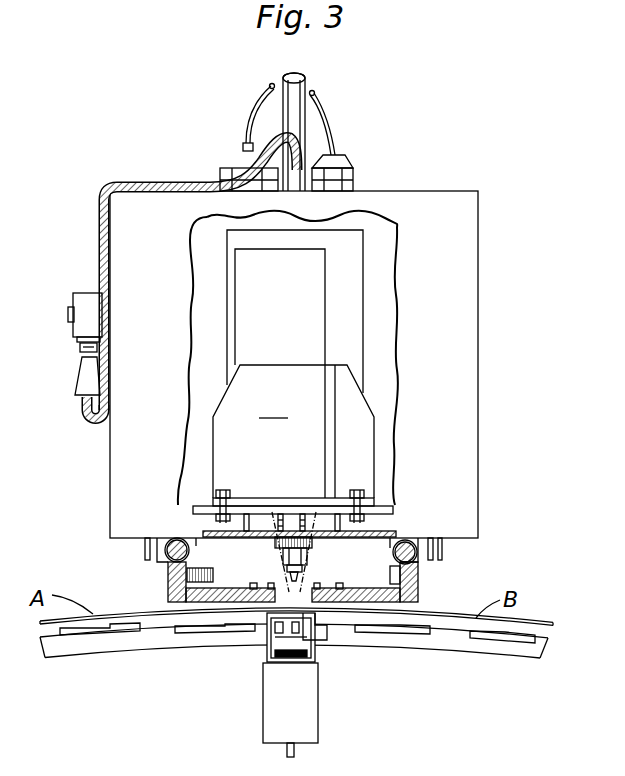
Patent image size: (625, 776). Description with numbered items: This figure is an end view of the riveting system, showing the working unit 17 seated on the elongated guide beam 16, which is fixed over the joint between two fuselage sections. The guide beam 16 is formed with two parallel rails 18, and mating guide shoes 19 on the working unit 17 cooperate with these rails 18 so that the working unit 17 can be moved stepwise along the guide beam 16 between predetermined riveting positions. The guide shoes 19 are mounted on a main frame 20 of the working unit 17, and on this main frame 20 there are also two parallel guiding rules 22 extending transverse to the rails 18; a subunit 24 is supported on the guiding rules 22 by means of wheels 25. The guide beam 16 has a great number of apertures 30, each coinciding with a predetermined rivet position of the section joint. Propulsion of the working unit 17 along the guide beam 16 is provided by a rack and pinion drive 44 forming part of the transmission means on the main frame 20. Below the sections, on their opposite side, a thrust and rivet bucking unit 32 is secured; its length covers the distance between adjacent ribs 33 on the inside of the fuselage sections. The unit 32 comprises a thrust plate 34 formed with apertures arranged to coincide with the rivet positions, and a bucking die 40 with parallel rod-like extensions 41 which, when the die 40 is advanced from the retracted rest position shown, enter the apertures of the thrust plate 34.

The guide beam 16 is at (378, 575).
The working unit 17 is at (481, 346).
The rails 18 is at (176, 538).
The guide shoes 19 is at (162, 546).
The main frame 20 is at (354, 544).
The guiding rules 22 is at (392, 502).
The subunit 24 is at (294, 383).
The wheels 25 is at (228, 498).
The apertures 30 is at (284, 590).
The thrust and rivet bucking unit 32 is at (305, 703).
The ribs 33 is at (160, 640).
The thrust plate 34 is at (326, 626).
The bucking die 40 is at (312, 648).
The rod-like extensions 41 is at (283, 636).
The rack and pinion drive 44 is at (166, 580).